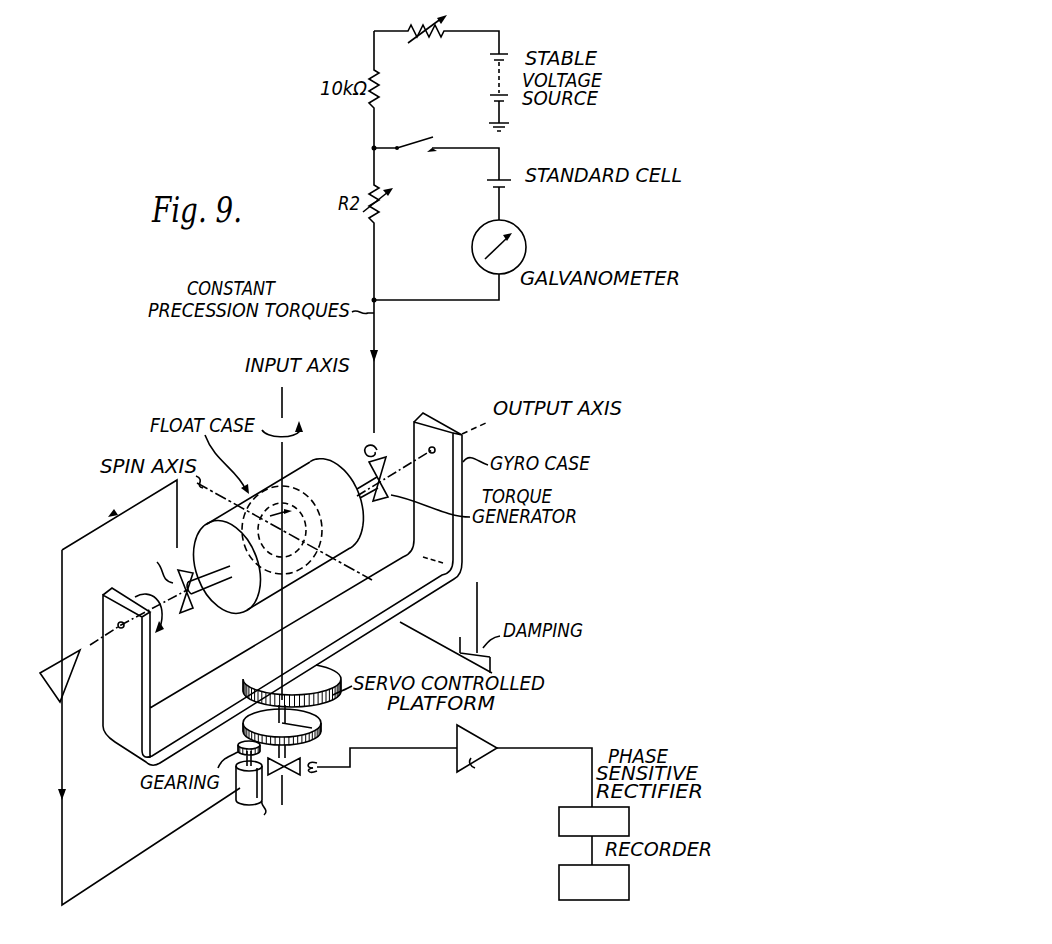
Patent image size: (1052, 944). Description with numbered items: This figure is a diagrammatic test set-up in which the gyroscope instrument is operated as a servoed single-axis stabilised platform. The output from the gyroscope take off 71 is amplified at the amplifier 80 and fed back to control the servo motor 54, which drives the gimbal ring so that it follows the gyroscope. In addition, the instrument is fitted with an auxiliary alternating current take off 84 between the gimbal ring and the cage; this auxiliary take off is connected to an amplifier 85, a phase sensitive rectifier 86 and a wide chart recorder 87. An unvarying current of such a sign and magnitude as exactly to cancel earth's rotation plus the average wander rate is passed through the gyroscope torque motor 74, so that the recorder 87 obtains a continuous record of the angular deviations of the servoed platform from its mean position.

The gyroscope torque motor 74 is at (394, 462).
The gyroscope take off 71 is at (193, 617).
The amplifier 80 is at (80, 683).
The servo motor 54 is at (270, 799).
The auxiliary alternating current take off 84 is at (313, 773).
The amplifier 85 is at (456, 735).
The phase sensitive rectifier 86 is at (594, 821).
The wide chart recorder 87 is at (594, 882).